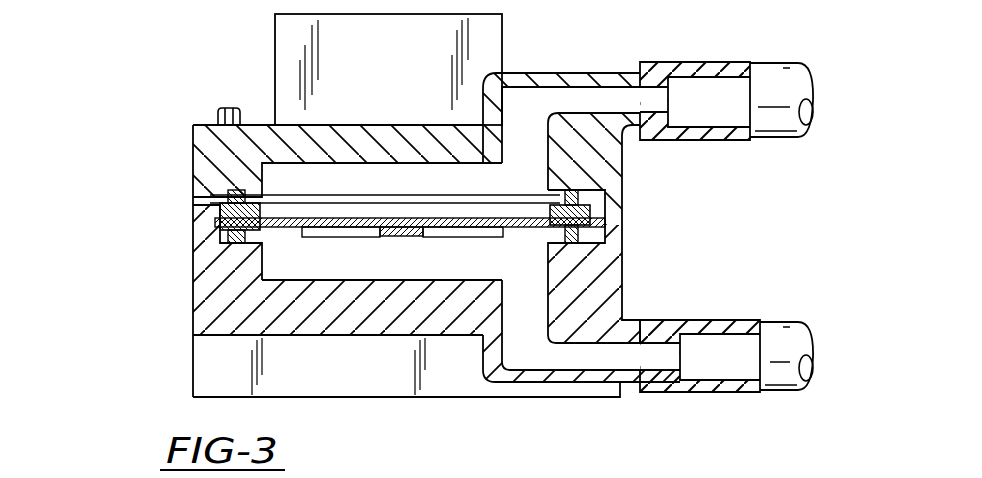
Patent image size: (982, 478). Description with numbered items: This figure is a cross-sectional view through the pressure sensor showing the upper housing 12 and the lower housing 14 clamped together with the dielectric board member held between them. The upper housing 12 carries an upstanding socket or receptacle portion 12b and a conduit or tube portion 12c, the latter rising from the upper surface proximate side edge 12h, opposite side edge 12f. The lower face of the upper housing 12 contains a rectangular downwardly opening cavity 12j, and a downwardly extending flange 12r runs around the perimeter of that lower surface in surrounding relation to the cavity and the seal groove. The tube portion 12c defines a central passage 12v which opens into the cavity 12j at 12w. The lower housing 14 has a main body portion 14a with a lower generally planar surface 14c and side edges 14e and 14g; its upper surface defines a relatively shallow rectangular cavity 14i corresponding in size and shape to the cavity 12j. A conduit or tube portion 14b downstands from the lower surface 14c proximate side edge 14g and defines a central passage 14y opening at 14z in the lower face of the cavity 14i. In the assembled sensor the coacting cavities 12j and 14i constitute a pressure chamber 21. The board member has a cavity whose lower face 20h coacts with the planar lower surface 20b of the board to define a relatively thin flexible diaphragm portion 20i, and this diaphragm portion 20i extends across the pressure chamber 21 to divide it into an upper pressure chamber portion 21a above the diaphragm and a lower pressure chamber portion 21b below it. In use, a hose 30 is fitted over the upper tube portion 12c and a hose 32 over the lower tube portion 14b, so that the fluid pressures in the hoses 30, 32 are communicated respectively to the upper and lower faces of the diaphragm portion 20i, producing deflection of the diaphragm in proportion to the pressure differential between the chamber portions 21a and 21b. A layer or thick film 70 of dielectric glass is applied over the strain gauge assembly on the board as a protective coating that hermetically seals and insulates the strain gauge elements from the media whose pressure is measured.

The upper housing 12 is at (184, 106).
The upstanding socket or receptacle portion 12b is at (277, 62).
The conduit or tube portion 12c is at (570, 75).
The side edge 12f is at (193, 152).
The side edge 12h is at (622, 153).
The rectangular downwardly opening cavity 12j is at (393, 165).
The downwardly extending flange 12r is at (220, 212).
The central passage 12v is at (667, 104).
The opening of central passage 12w is at (512, 137).
The lower housing 14 is at (176, 362).
The main body portion 14a is at (182, 311).
The conduit or tube portion 14b is at (660, 385).
The lower generally planar surface 14c is at (350, 336).
The side edge 14e is at (193, 280).
The side edge 14g is at (622, 250).
The relatively shallow rectangular cavity 14i is at (409, 280).
The central passage 14y is at (668, 357).
The opening of central passage 14z is at (523, 288).
The lower surface of board member 20b is at (463, 232).
The lower face of cavity 20h is at (430, 217).
The diaphragm portion 20i is at (358, 236).
The pressure chamber 21 is at (258, 246).
The upper pressure chamber portion 21a is at (350, 182).
The lower pressure chamber portion 21b is at (258, 280).
The hose 30 is at (752, 62).
The hose 32 is at (735, 323).
The layer or thick film of dielectric glass material 70 is at (276, 242).